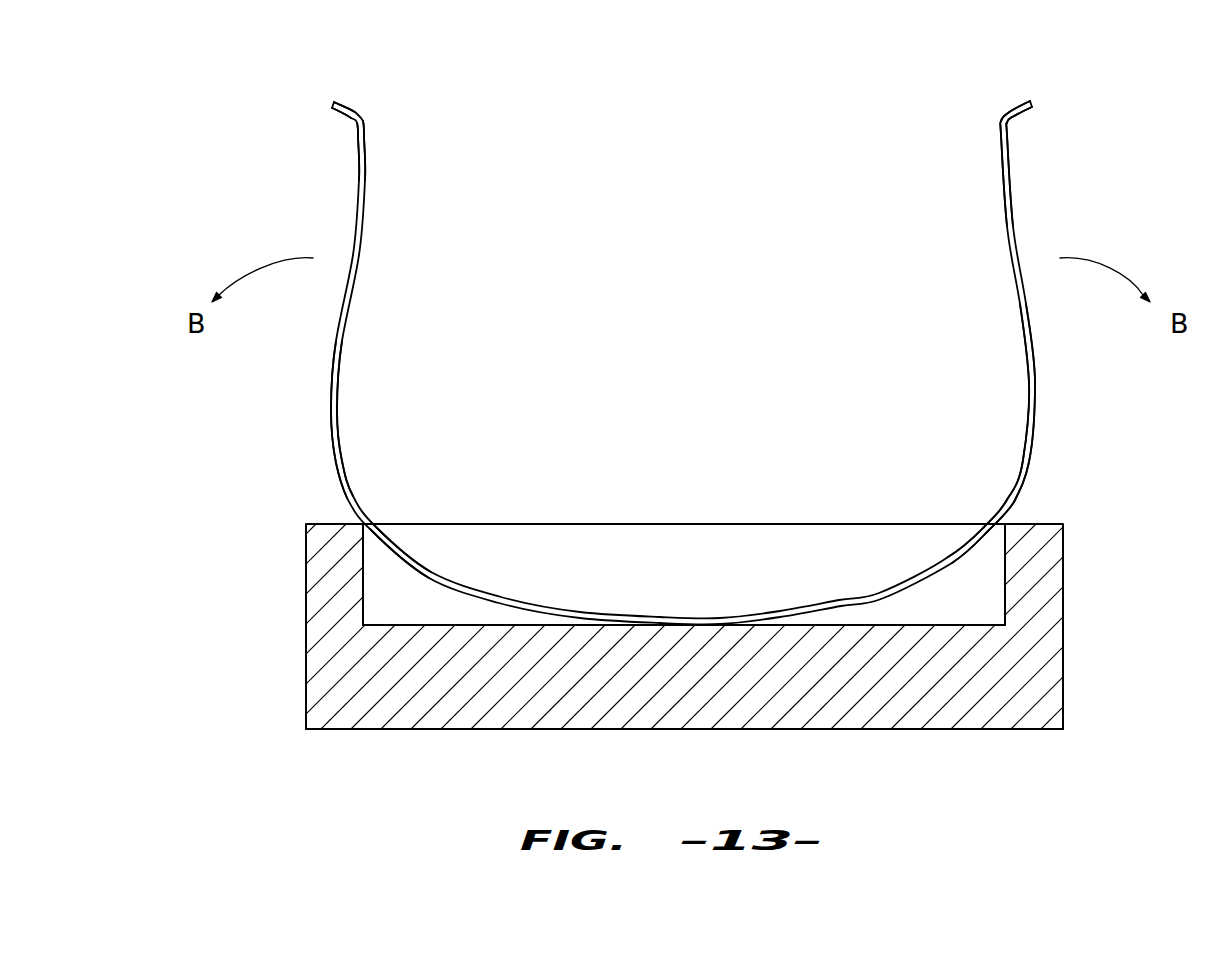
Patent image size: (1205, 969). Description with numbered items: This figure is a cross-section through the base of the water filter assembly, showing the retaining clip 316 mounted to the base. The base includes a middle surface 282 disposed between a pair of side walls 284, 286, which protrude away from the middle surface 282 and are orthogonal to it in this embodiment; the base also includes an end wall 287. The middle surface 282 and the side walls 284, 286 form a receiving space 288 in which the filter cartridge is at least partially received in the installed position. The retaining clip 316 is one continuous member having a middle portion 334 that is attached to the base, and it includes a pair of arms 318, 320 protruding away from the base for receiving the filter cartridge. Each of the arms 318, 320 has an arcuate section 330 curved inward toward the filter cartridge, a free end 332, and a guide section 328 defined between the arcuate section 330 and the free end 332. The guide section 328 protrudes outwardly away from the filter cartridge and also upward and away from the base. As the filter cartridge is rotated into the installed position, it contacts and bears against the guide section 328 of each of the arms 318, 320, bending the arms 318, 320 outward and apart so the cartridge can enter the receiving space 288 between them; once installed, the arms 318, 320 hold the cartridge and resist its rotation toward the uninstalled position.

The side wall 284 is at (658, 615).
The side wall 286 is at (457, 730).
The end wall 287 is at (816, 524).
The receiving space 288 is at (694, 545).
The middle surface 282 is at (441, 613).
The middle portion 334 is at (641, 605).
The retaining clip 316 is at (675, 411).
The arm 318 is at (358, 279).
The arm 320 is at (1015, 278).
The guide section 328 is at (368, 104).
The arcuate section 330 is at (353, 408).
The free end 332 is at (320, 101).